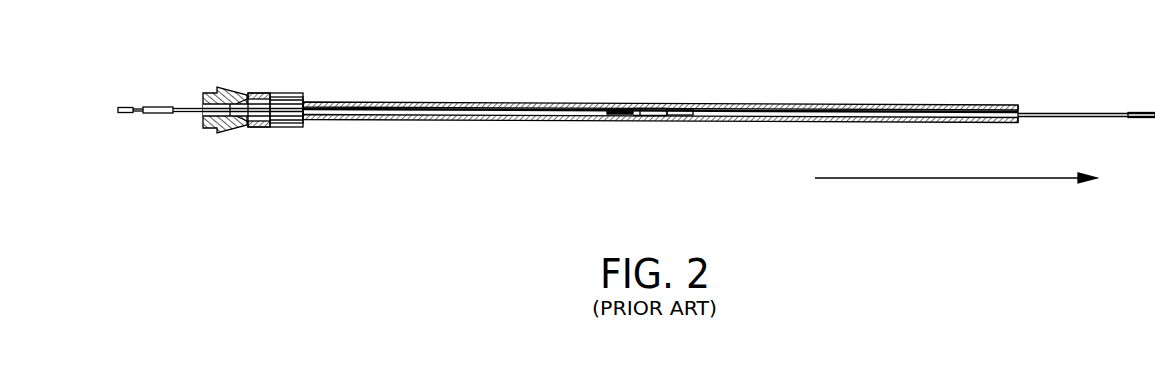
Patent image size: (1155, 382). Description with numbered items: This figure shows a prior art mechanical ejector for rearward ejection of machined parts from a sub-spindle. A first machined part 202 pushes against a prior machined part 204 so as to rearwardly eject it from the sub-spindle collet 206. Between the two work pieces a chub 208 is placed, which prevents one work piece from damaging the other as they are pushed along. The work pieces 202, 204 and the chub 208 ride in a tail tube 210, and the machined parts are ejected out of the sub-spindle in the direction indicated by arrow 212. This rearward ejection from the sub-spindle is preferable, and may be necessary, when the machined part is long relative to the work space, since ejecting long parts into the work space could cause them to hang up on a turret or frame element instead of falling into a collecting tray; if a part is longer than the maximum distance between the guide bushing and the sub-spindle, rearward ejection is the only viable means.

The first machined part 202 is at (190, 113).
The prior machined part 204 is at (1053, 114).
The sub-spindle collet 206 is at (253, 93).
The chub 208 is at (653, 111).
The tail tube 210 is at (587, 121).
The arrow 212 is at (972, 180).